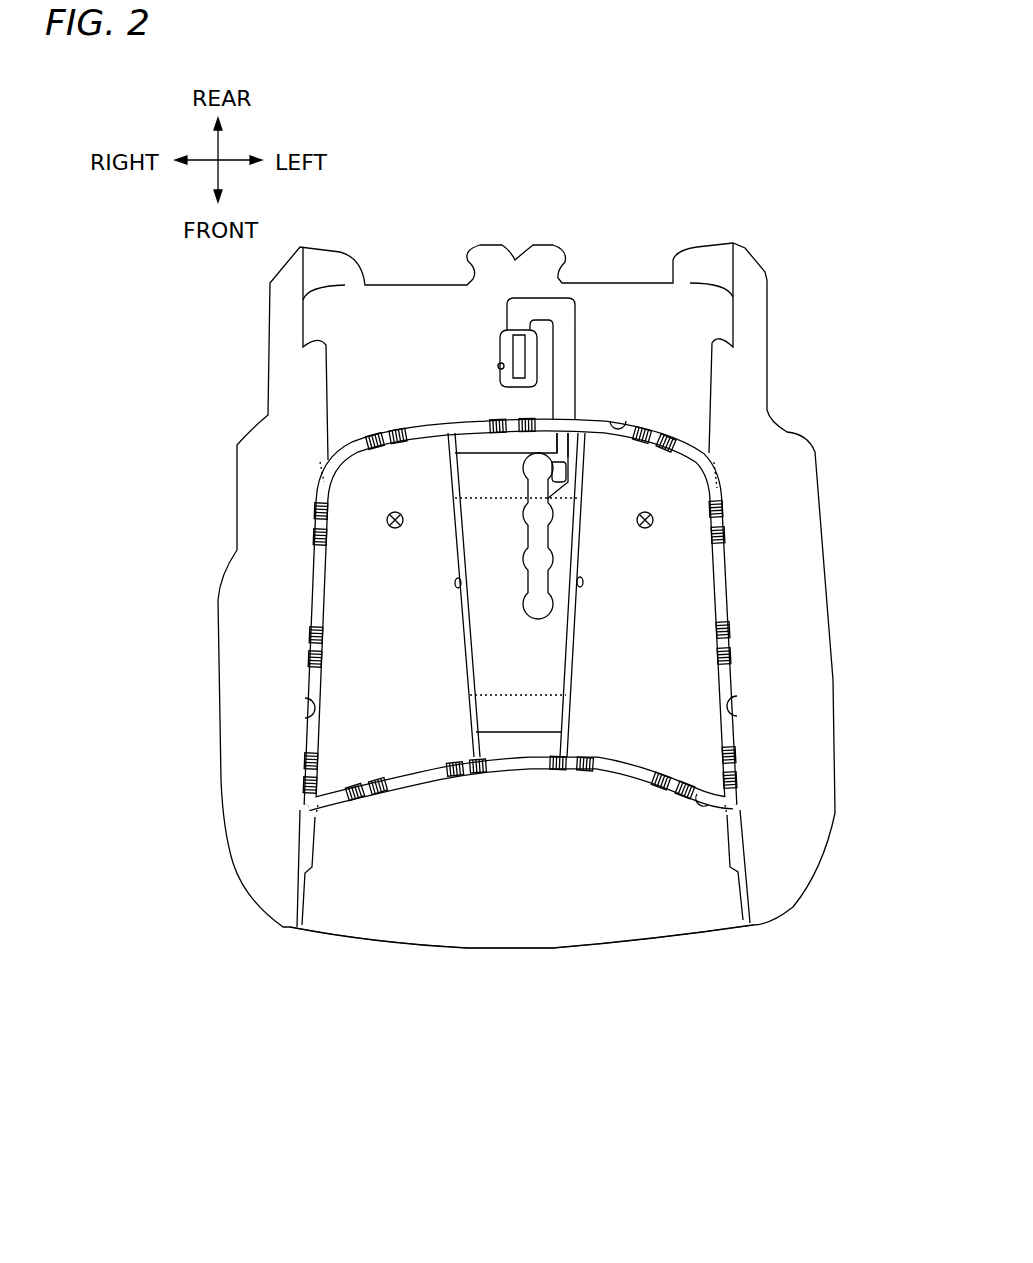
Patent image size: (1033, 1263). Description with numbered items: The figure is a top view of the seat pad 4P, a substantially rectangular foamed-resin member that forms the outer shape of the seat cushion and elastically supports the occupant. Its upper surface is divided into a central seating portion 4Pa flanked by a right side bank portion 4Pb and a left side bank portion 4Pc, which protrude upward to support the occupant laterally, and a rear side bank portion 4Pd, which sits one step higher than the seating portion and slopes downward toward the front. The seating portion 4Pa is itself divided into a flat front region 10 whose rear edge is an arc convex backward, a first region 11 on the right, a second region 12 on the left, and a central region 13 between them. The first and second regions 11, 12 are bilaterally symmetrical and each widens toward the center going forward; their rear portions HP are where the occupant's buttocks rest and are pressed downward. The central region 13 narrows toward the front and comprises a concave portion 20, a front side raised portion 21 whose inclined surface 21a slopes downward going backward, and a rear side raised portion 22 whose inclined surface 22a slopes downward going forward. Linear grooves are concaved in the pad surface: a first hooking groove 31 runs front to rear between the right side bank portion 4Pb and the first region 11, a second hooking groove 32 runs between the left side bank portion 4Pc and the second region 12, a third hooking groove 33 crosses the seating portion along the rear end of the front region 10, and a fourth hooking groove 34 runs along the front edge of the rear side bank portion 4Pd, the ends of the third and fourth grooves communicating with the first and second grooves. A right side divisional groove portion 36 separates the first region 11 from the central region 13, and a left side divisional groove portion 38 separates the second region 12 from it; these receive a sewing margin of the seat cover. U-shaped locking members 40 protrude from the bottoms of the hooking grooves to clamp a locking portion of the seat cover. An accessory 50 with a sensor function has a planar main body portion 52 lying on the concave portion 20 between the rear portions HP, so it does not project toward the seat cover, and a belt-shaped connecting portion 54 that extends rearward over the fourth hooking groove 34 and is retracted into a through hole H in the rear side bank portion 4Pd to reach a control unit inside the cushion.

The seat pad 4P is at (733, 192).
The seating portion 4Pa is at (610, 1060).
The right side bank portion 4Pb is at (252, 623).
The left side bank portion 4Pc is at (790, 652).
The rear side bank portion 4Pd is at (405, 318).
The front region 10 is at (437, 917).
The first region 11 is at (425, 747).
The second region 12 is at (633, 742).
The central region 13 is at (530, 706).
The concave portion 20 is at (518, 595).
The front side raised portion 21 is at (492, 743).
The inclined surface 21a is at (495, 713).
The rear side raised portion 22 is at (465, 448).
The inclined surface 22a is at (472, 480).
The first hooking groove 31 is at (305, 710).
The second hooking groove 32 is at (740, 706).
The third hooking groove 33 is at (708, 803).
The fourth hooking groove 34 is at (623, 426).
The right side divisional groove portion 36 is at (455, 583).
The left side divisional groove portion 38 is at (583, 582).
The locking member 40 is at (662, 431).
The accessory 50 is at (706, 412).
The main body portion 52 is at (542, 517).
The connecting portion 54 is at (567, 345).
The through hole H is at (498, 366).
The rear portion HP is at (385, 520).